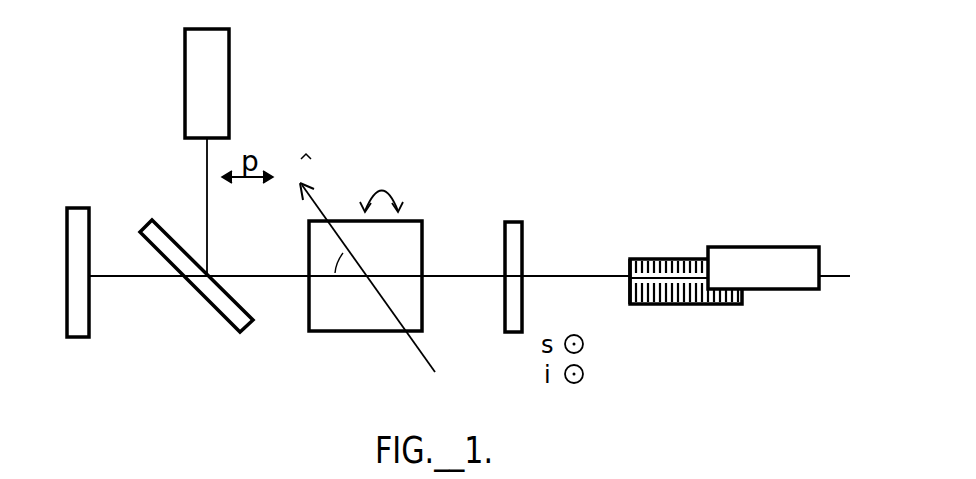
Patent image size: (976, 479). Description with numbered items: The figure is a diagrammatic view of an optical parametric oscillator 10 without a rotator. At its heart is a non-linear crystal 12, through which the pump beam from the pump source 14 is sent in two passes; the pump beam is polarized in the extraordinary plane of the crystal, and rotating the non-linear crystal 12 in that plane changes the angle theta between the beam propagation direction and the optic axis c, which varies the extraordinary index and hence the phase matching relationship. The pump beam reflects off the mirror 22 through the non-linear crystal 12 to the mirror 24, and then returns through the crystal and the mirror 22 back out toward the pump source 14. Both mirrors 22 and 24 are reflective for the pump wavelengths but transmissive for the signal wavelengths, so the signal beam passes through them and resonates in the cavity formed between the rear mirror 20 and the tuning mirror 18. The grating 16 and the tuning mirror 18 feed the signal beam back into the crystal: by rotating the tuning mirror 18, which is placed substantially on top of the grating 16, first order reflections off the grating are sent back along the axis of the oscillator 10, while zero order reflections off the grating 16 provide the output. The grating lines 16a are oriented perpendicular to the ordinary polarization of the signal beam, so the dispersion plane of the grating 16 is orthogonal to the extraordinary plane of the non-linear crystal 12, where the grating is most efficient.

The optical parametric oscillator 10 is at (546, 103).
The non-linear crystal 12 is at (377, 333).
The pump source 14 is at (220, 58).
The grating 16 is at (723, 306).
The grating lines 16a is at (640, 305).
The tuning mirror 18 is at (755, 253).
The rear mirror 20 is at (80, 334).
The mirror 22 is at (235, 328).
The mirror 24 is at (515, 335).